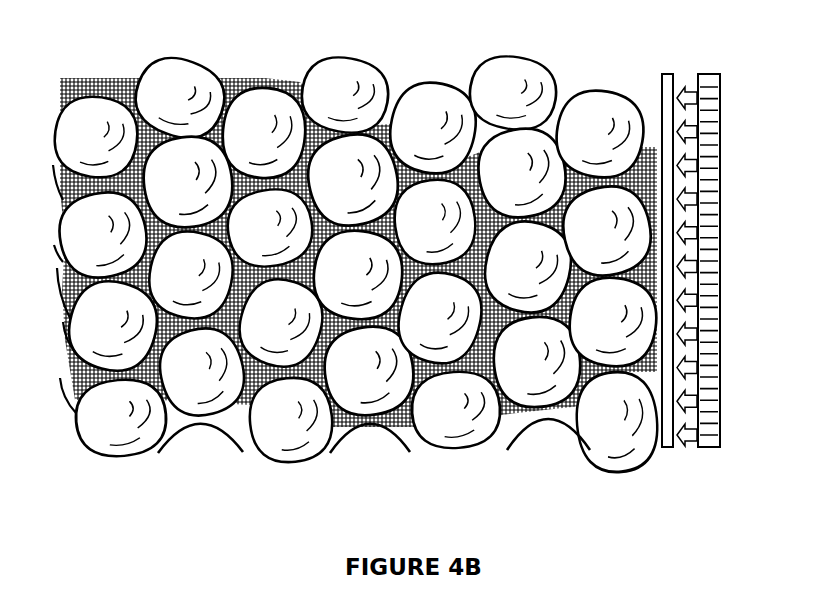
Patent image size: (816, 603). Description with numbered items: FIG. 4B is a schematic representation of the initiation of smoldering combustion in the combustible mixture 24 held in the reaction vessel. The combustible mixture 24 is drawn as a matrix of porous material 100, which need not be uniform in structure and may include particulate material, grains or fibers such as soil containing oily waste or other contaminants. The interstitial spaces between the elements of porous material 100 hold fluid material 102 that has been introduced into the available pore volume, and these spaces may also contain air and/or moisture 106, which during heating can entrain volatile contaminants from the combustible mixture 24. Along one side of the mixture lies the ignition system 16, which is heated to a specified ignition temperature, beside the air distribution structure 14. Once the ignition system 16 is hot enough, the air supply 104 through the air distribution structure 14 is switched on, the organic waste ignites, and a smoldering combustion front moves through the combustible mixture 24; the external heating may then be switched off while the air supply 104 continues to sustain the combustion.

The combustible mixture 24 is at (343, 294).
The porous material 100 is at (447, 430).
The fluid material 102 is at (336, 425).
The air and/or moisture 106 is at (360, 137).
The ignition system 16 is at (661, 443).
The air distribution structure 14 is at (710, 448).
The air supply 104 is at (682, 448).